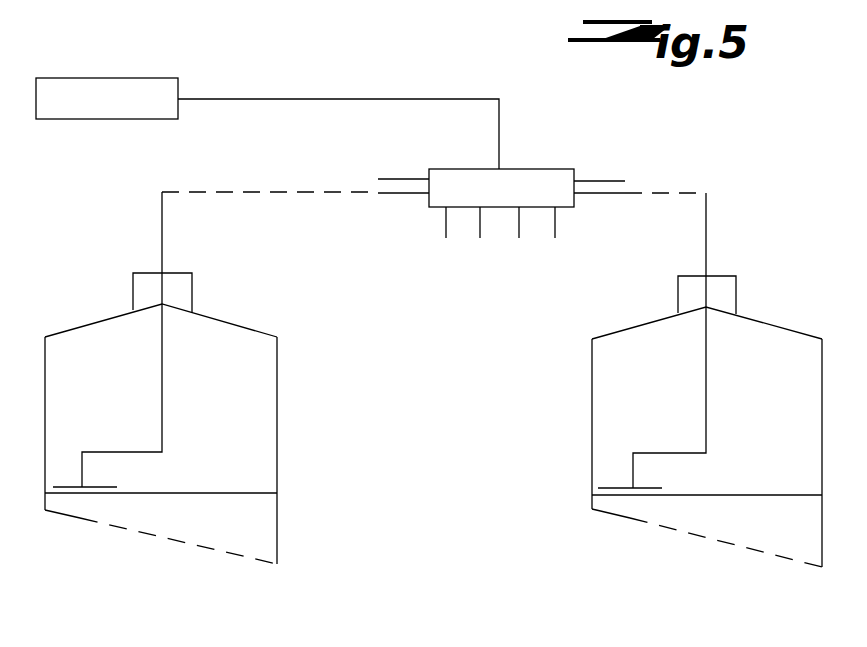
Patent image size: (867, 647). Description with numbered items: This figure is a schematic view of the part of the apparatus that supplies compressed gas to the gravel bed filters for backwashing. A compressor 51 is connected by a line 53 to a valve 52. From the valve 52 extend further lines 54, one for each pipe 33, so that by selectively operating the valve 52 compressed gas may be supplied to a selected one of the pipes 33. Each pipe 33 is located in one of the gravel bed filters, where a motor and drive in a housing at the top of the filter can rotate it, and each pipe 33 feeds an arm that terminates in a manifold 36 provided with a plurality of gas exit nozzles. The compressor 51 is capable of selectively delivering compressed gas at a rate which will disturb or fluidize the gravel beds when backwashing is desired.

The compressor 51 is at (147, 78).
The valve 52 is at (507, 169).
The line 53 is at (326, 77).
The further lines 54 is at (556, 238).
The pipe 33 is at (164, 237).
The manifold 36 is at (108, 486).